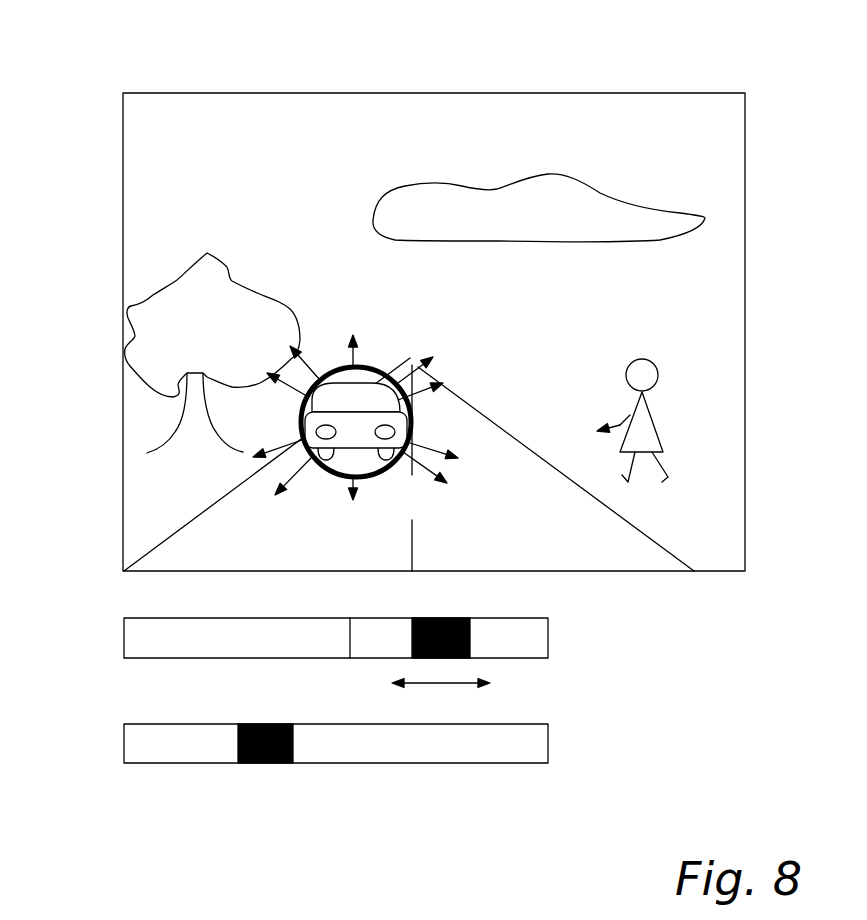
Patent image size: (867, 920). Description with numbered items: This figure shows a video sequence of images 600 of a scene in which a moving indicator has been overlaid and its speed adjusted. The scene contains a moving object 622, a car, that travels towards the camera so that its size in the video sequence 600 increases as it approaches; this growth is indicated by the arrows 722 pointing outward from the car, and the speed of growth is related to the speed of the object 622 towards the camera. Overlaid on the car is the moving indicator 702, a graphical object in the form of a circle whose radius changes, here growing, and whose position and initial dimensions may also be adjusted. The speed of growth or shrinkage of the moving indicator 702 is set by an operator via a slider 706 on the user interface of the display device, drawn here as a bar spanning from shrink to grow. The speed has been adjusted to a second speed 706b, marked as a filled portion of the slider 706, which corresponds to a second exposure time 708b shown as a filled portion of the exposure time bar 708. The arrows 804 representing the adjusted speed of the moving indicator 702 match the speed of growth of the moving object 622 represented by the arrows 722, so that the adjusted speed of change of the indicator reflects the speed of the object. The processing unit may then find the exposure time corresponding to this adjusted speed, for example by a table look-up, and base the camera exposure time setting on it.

The video sequence of images 600 is at (233, 93).
The moving object 622 is at (390, 458).
The moving indicator 702 is at (365, 370).
The arrows 722 is at (300, 362).
The arrows 804 is at (300, 472).
The slider 706 is at (124, 645).
The second speed 706b is at (412, 643).
The exposure time 708 is at (124, 752).
The second exposure time 708b is at (238, 763).